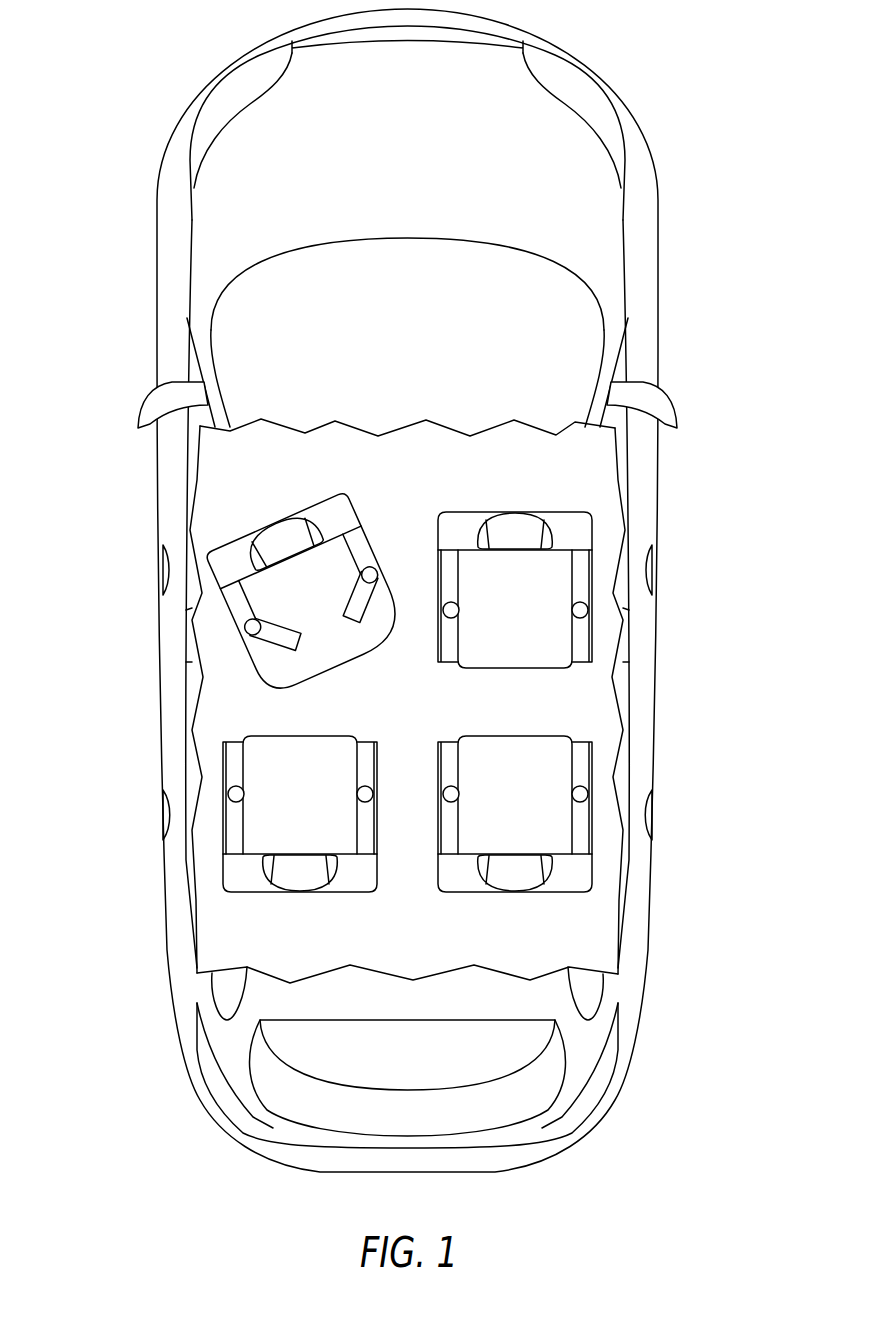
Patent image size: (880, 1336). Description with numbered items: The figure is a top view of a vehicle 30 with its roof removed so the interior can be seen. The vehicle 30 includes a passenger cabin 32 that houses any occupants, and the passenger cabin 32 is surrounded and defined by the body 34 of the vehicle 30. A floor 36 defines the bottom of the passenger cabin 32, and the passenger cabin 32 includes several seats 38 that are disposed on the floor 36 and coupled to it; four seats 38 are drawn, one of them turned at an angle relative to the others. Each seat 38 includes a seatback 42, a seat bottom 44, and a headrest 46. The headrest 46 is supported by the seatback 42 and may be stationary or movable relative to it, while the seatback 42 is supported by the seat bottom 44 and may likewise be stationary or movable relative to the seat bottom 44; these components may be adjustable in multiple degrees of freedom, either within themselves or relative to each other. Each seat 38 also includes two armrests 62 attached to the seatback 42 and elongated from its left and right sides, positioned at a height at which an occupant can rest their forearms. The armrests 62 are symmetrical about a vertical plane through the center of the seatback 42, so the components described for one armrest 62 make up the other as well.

The vehicle 30 is at (130, 70).
The passenger cabin 32 is at (573, 473).
The body 34 is at (658, 330).
The floor 36 is at (396, 481).
The seat 38 is at (227, 612).
The seatback 42 is at (332, 492).
The seat bottom 44 is at (331, 670).
The headrest 46 is at (278, 530).
The armrest 62 is at (352, 597).